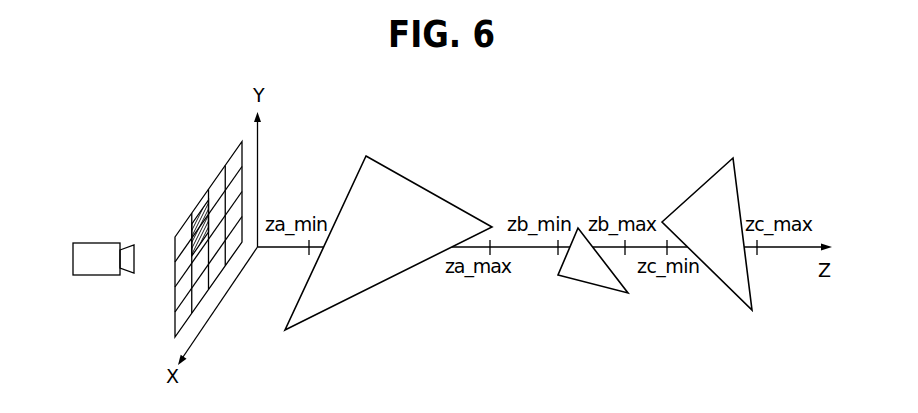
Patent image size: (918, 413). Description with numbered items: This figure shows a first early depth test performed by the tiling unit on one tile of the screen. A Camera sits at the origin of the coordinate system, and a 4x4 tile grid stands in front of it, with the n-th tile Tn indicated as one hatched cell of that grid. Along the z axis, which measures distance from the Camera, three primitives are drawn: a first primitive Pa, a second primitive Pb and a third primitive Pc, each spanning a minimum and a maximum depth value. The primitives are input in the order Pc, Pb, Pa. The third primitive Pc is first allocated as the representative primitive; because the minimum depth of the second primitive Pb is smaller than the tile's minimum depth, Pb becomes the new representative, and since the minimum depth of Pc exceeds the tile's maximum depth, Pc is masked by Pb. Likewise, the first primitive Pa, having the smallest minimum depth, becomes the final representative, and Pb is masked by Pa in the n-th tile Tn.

The camera Camera is at (97, 275).
The element 4x4 tile is at (172, 217).
The n-th tile Tn is at (198, 214).
The first primitive Pa is at (430, 190).
The second primitive Pb is at (587, 213).
The third primitive Pc is at (695, 188).